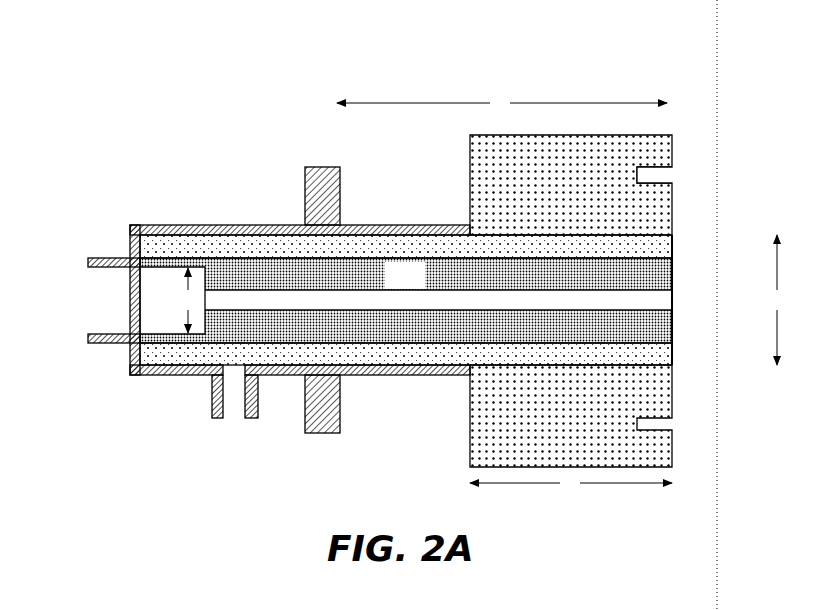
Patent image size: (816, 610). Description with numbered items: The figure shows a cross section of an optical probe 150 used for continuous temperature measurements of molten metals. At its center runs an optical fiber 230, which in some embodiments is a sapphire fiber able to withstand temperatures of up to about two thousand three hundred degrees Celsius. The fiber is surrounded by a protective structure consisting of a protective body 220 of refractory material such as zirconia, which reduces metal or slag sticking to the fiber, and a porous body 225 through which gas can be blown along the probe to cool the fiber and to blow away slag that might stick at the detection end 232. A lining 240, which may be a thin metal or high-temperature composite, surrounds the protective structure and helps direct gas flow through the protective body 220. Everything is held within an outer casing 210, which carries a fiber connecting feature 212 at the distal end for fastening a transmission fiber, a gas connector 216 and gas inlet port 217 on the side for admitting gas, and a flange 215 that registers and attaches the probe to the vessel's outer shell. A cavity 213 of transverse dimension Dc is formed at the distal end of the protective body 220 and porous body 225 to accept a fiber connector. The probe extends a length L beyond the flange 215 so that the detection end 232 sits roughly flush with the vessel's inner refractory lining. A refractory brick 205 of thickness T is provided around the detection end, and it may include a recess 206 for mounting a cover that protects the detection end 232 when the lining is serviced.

The optical probe 150 is at (143, 98).
The refractory brick 205 is at (655, 150).
The recess 206 is at (670, 175).
The outer casing 210 is at (157, 223).
The fiber connecting feature 212 is at (93, 258).
The cavity 213 is at (155, 302).
The flange 215 is at (307, 167).
The gas connector 216 is at (212, 402).
The gas inlet port 217 is at (235, 392).
The protective body 220 is at (422, 284).
The porous body 225 is at (425, 252).
The optical fiber 230 is at (673, 297).
The detection end 232 is at (727, 234).
The lining 240 is at (655, 362).